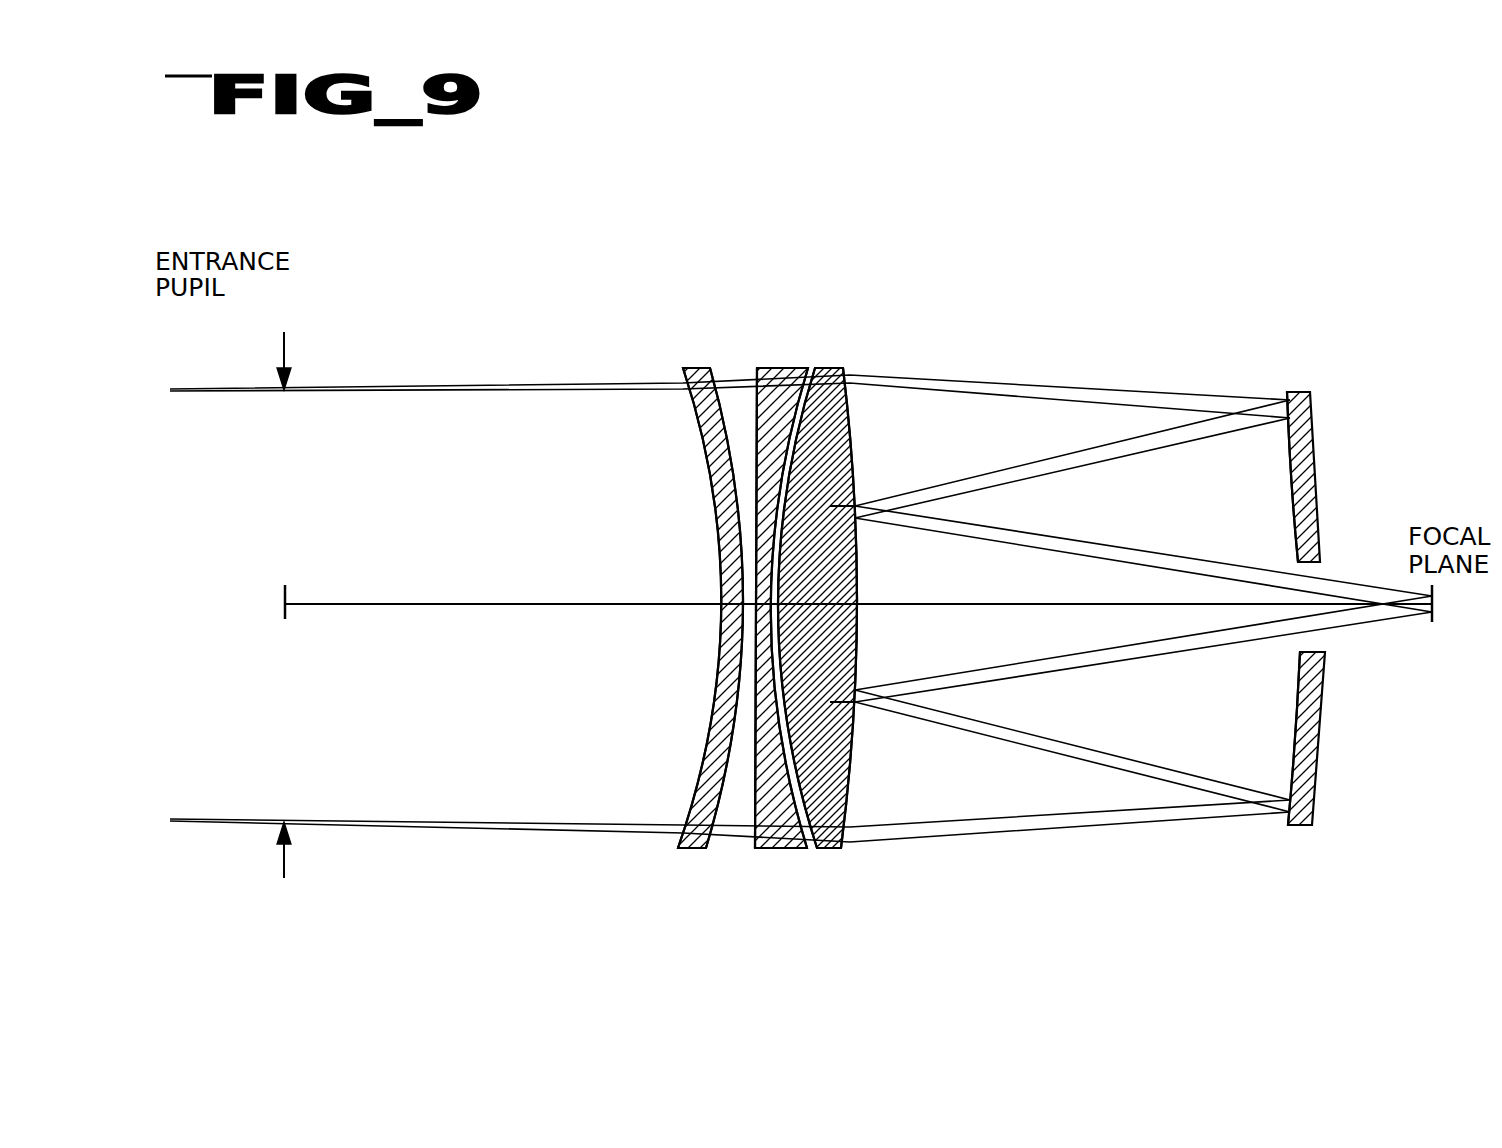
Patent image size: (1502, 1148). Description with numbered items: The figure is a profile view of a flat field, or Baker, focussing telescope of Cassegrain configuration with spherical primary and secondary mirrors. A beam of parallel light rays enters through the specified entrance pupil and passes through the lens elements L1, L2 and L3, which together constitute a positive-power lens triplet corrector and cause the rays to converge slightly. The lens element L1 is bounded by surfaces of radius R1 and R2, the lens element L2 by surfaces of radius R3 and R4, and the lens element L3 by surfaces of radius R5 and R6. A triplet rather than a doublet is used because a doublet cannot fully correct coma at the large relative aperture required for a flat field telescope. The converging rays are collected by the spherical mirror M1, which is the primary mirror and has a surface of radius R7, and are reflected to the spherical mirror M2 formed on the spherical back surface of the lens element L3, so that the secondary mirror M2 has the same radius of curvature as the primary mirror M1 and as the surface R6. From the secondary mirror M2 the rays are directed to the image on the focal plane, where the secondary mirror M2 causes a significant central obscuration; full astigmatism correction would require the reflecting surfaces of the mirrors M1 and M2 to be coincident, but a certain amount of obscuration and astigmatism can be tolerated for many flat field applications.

The lens element L1 is at (654, 610).
The lens element L2 is at (741, 610).
The lens element L3 is at (865, 610).
The spherical mirror M1 is at (1316, 612).
The spherical mirror M2 is at (888, 510).
The radius R1 is at (700, 770).
The radius R2 is at (713, 850).
The radius R3 is at (746, 850).
The radius R4 is at (810, 853).
The radius R5 is at (816, 854).
The radius R6 is at (843, 852).
The radius R7 is at (1286, 824).